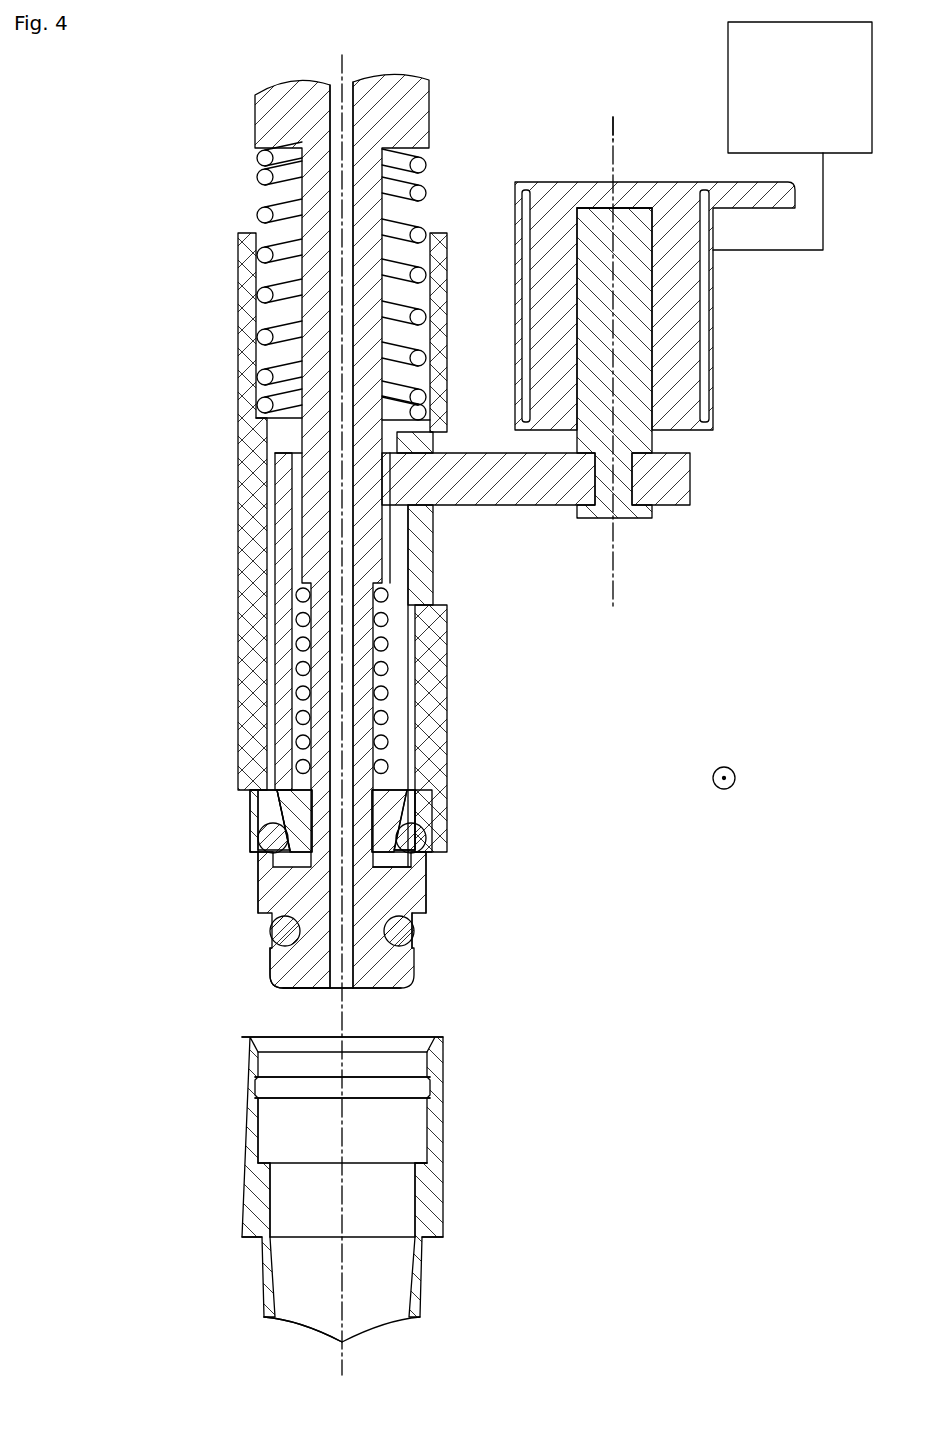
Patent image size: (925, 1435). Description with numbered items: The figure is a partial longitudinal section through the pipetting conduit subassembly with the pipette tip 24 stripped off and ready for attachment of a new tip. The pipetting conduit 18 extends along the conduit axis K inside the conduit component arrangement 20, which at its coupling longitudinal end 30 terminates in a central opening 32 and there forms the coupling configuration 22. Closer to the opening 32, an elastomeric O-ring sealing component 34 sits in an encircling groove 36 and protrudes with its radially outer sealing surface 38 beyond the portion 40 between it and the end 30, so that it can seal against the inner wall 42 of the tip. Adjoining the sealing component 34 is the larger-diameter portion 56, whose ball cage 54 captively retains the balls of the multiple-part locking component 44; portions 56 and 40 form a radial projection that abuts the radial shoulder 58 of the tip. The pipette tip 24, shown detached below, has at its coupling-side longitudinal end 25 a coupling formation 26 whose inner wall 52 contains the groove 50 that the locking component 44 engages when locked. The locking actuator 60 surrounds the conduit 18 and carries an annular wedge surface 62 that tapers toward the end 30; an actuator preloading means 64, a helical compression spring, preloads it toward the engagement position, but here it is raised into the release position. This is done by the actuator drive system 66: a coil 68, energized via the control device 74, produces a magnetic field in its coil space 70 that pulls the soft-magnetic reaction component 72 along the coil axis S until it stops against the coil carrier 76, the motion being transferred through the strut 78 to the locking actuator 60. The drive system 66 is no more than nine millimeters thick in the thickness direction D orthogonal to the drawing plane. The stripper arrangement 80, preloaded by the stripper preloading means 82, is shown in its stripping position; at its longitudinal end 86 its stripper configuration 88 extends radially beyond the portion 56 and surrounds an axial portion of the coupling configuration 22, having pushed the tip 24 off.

The pipetting conduit 18 is at (352, 110).
The conduit component arrangement 20 is at (390, 105).
The coupling configuration 22 is at (450, 876).
The pipette tip 24 is at (500, 1213).
The coupling-side longitudinal end 25 is at (460, 1022).
The coupling formation 26 is at (438, 1150).
The coupling longitudinal end 30 is at (300, 997).
The opening 32 is at (350, 991).
The sealing component 34 is at (415, 932).
The encircling groove 36 is at (428, 915).
The radially outer sealing surface 38 is at (268, 930).
The portion 40 is at (272, 966).
The inner wall 42 is at (272, 1186).
The locking component 44 is at (252, 843).
The groove 50 is at (368, 1088).
The inner wall 52 is at (260, 1128).
The ball cage 54 is at (258, 803).
The portion 56 is at (262, 888).
The radial shoulder 58 is at (420, 1156).
The locking actuator 60 is at (393, 728).
The annular wedge surface 62 is at (402, 822).
The actuator preloading means 64 is at (420, 656).
The actuator drive system 66 is at (762, 428).
The coil 68 is at (708, 290).
The coil space 70 is at (646, 208).
The reaction component 72 is at (614, 363).
The control device 74 is at (792, 136).
The coil carrier 76 is at (548, 182).
The strut 78 is at (536, 479).
The stripper arrangement 80 is at (248, 440).
The stripper preloading means 82 is at (268, 298).
The longitudinal end 86 is at (218, 826).
The stripper configuration 88 is at (432, 830).
The thickness direction D is at (735, 771).
The conduit axis K is at (350, 1356).
The coil axis S is at (613, 135).